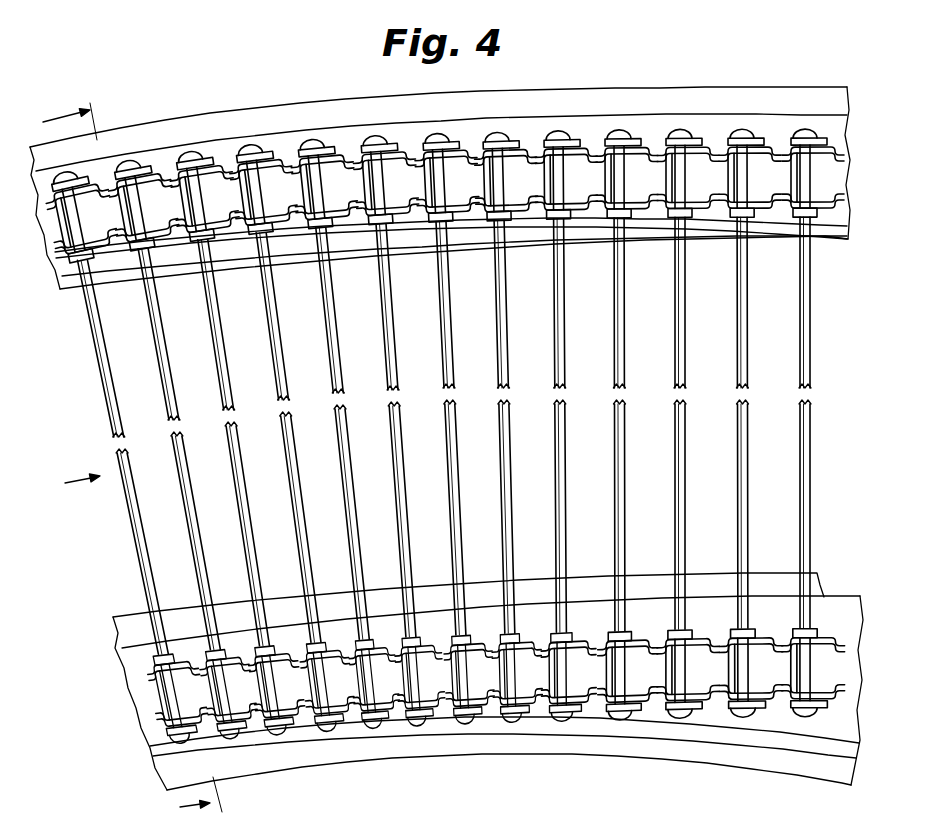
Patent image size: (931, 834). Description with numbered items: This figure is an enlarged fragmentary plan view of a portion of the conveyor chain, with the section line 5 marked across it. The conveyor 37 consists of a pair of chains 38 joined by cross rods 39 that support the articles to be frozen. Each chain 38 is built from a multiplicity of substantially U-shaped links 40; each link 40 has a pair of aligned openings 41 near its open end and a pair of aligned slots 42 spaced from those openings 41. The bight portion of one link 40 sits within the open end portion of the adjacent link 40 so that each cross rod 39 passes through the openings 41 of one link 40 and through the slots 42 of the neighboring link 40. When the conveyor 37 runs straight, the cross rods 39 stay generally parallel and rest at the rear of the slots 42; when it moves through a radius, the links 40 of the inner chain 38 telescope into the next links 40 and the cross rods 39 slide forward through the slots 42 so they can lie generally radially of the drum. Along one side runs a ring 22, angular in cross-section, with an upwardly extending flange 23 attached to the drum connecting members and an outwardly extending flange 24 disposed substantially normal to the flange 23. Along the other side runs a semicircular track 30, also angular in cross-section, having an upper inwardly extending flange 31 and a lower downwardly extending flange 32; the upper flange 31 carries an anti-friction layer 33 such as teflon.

The section line 5- 5 is at (132, 463).
The ring 22 is at (675, 758).
The upwardly extending flange 23 is at (458, 753).
The outwardly extending flange 24 is at (548, 555).
The semicircular track 30 is at (678, 60).
The upper inwardly extending flange 31 is at (714, 97).
The lower downwardly extending flange 32 is at (767, 68).
The anti-friction layer 33 is at (790, 123).
The conveyor 37 is at (103, 388).
The chain 38 is at (172, 168).
The cross rod 39 is at (213, 421).
The U-shaped link 40 is at (558, 144).
The aligned opening 41 is at (422, 643).
The aligned slot 42 is at (350, 665).